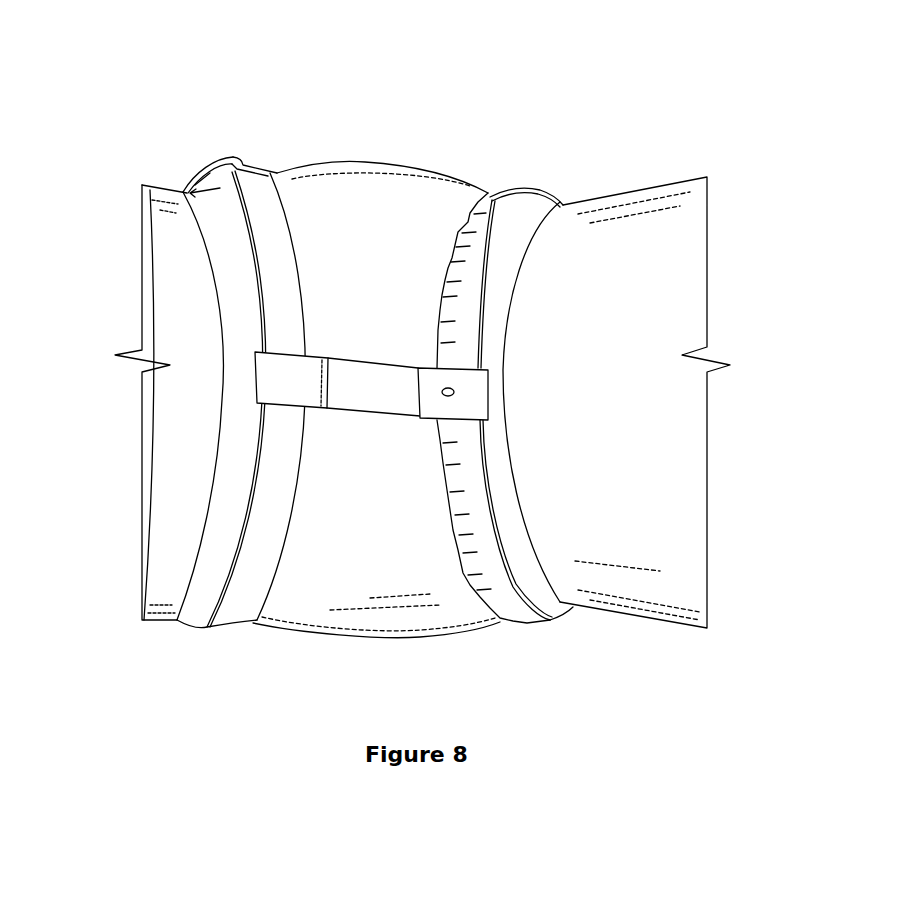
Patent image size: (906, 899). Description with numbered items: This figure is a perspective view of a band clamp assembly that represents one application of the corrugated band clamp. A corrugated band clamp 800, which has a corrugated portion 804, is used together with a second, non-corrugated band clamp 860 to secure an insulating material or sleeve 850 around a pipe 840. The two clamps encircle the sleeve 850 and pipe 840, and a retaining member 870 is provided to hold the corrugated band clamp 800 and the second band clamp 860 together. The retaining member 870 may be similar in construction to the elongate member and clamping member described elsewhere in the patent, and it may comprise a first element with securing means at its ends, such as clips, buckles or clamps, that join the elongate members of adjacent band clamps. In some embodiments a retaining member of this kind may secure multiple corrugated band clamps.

The corrugated band clamp 800 is at (495, 198).
The corrugated portion 804 is at (470, 550).
The pipe 840 is at (168, 228).
The insulating material/sleeve 850 is at (380, 192).
The second band clamp 860 is at (242, 165).
The retaining member 870 is at (377, 390).